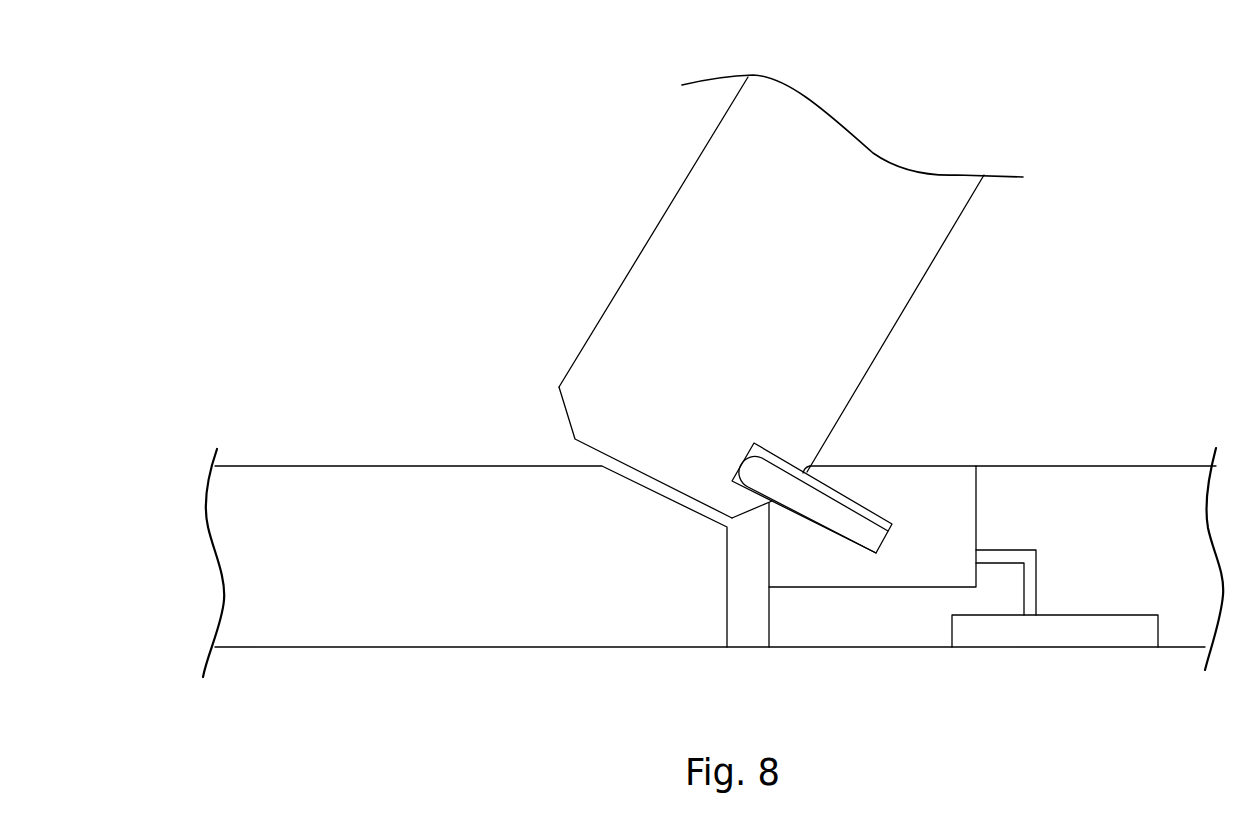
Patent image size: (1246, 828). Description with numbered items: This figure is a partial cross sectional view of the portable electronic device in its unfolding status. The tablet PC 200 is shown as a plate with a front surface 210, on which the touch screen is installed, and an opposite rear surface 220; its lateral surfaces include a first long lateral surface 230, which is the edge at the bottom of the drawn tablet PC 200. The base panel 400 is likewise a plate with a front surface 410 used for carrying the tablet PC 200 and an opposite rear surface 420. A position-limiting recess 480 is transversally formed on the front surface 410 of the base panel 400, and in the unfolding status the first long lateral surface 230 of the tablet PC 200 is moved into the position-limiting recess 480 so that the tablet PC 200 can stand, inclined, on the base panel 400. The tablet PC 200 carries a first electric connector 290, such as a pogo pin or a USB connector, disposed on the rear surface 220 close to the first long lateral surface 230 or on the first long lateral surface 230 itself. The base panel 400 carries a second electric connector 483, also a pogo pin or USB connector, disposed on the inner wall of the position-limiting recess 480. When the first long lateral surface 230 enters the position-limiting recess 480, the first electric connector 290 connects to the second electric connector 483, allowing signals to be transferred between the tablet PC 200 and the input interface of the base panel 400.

The tablet PC 200 is at (756, 375).
The front surface 210 is at (644, 247).
The rear surface 220 is at (913, 295).
The first long lateral surface 230 is at (660, 484).
The first electric connector 290 is at (763, 508).
The base panel 400 is at (713, 550).
The front surface 410 is at (323, 466).
The rear surface 420 is at (347, 647).
The position-limiting recess 480 is at (752, 635).
The second electric connector 483 is at (836, 517).